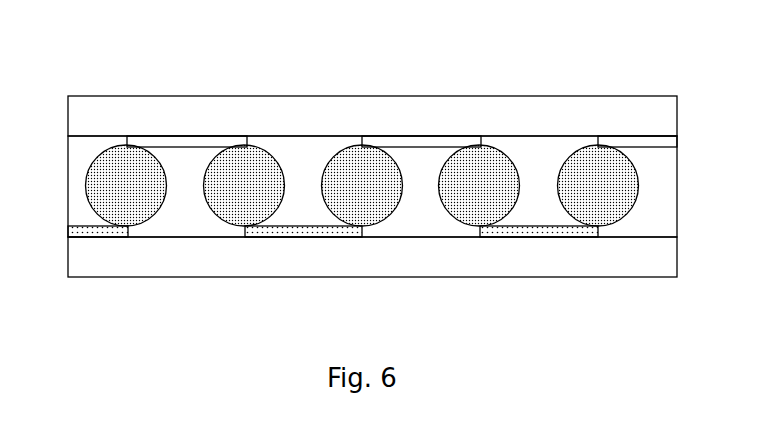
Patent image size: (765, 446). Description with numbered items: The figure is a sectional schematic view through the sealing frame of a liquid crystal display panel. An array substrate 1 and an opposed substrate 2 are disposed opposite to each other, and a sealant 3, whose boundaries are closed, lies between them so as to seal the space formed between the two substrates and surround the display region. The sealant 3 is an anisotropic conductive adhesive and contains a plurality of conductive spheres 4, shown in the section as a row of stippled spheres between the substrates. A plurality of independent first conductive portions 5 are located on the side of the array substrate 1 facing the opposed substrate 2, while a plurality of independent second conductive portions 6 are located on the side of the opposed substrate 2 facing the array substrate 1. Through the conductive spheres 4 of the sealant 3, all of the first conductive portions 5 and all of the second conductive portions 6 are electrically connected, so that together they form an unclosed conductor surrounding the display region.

The array substrate 1 is at (372, 279).
The opposed substrate 2 is at (372, 92).
The sealant 3 is at (348, 164).
The conductive spheres 4 is at (362, 236).
The first conductive portions 5 is at (333, 274).
The second conductive portions 6 is at (402, 97).